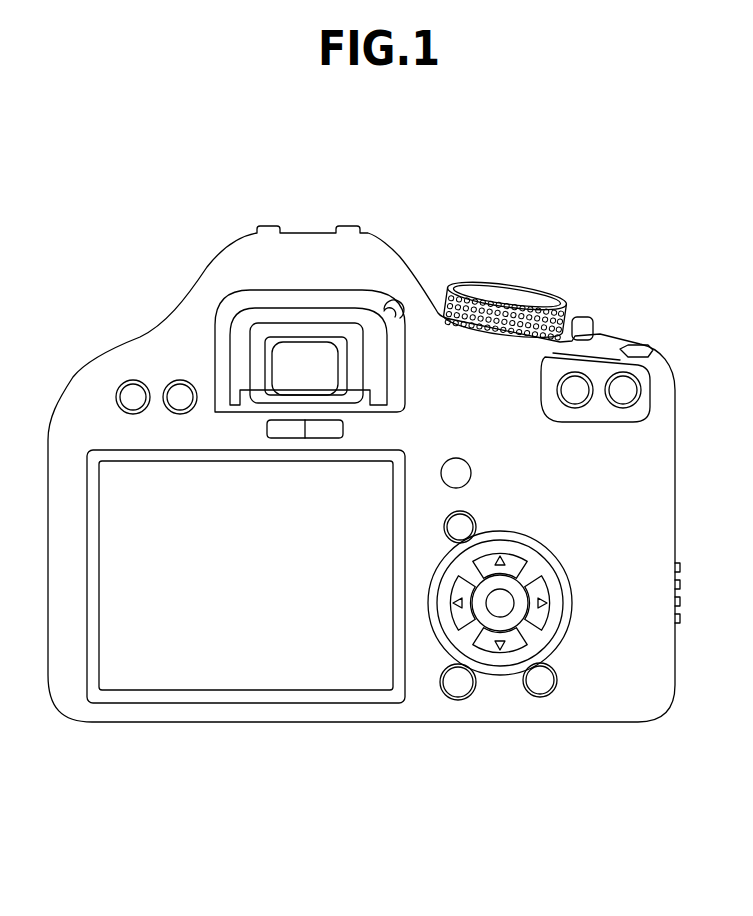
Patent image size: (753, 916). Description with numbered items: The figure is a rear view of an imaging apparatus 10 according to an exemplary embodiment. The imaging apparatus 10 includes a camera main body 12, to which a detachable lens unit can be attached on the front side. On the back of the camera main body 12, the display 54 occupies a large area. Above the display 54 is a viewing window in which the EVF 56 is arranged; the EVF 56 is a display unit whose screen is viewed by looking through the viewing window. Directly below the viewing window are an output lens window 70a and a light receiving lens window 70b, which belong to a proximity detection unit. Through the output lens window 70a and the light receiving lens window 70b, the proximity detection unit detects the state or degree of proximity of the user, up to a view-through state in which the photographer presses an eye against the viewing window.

The imaging apparatus 10 is at (584, 257).
The camera main body 12 is at (167, 352).
The display 54 is at (253, 672).
The EVF 56 is at (307, 350).
The output lens window 70a is at (288, 428).
The light receiving lens window 70b is at (328, 428).